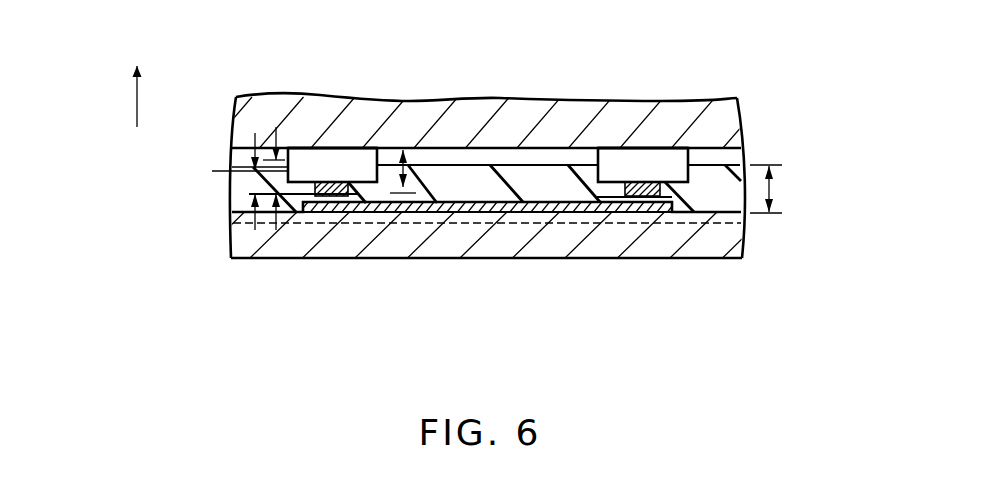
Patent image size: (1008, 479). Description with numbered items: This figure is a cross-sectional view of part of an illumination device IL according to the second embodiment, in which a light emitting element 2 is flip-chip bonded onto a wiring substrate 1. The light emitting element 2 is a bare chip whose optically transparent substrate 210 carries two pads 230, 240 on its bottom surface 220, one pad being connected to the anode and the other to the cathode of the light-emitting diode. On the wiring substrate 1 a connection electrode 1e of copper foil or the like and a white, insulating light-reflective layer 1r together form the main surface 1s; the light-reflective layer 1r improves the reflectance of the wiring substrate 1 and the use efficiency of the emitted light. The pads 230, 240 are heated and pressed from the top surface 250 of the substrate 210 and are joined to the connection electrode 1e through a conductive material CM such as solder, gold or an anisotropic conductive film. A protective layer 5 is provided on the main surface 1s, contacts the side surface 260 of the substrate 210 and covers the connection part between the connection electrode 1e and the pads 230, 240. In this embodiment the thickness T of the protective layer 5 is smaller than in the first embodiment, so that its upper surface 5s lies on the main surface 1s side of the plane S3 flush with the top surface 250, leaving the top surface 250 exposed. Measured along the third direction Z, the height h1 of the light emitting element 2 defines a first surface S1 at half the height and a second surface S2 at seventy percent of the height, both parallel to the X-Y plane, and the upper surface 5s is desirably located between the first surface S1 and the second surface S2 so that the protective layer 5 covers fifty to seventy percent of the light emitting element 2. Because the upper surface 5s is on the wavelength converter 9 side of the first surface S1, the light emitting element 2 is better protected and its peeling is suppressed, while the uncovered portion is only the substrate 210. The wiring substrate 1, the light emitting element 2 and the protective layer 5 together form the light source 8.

The wiring substrate 1 is at (475, 262).
The main surface 1s is at (497, 192).
The connection electrode 1e is at (576, 212).
The light-reflective layer 1r is at (690, 217).
The light emitting element 2 is at (375, 146).
The protective layer 5 is at (725, 200).
The upper surface 5s is at (472, 163).
The light source 8 is at (231, 266).
The wavelength converter 9 is at (240, 115).
The substrate 210 is at (308, 160).
The bottom surface 220 is at (626, 196).
The pad 230 is at (656, 180).
The pad 240 is at (318, 197).
The surface 250 is at (337, 158).
The side surface 260 is at (598, 152).
The conductive material CM is at (328, 197).
The illumination device IL is at (778, 97).
The thickness T is at (779, 188).
The height h1 is at (406, 160).
The first surface S1 is at (226, 170).
The second surface S2 is at (276, 127).
The plane S3 is at (403, 150).
The third direction Z is at (135, 81).